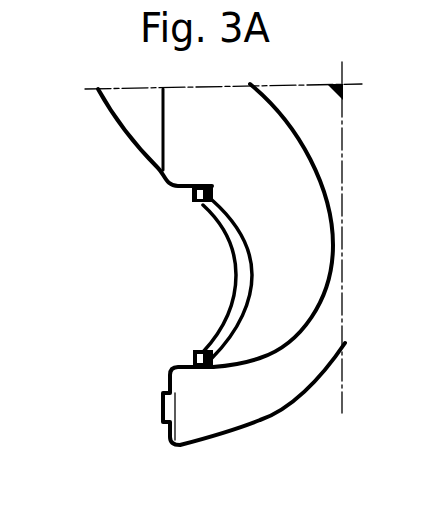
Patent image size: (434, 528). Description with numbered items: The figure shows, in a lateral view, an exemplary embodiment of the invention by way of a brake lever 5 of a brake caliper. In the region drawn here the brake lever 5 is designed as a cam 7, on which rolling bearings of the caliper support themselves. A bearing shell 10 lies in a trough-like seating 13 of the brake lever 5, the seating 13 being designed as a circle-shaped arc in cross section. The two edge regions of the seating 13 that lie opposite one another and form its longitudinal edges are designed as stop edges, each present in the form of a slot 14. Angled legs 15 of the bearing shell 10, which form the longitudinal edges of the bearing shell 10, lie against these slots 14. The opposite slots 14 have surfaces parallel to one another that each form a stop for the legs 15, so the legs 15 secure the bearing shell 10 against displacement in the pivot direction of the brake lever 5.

The brake lever 5 is at (121, 152).
The cam 7 is at (266, 383).
The bearing shell 10 is at (230, 230).
The seating 13 is at (253, 275).
The slot 14 is at (180, 190).
The leg 15 is at (194, 350).